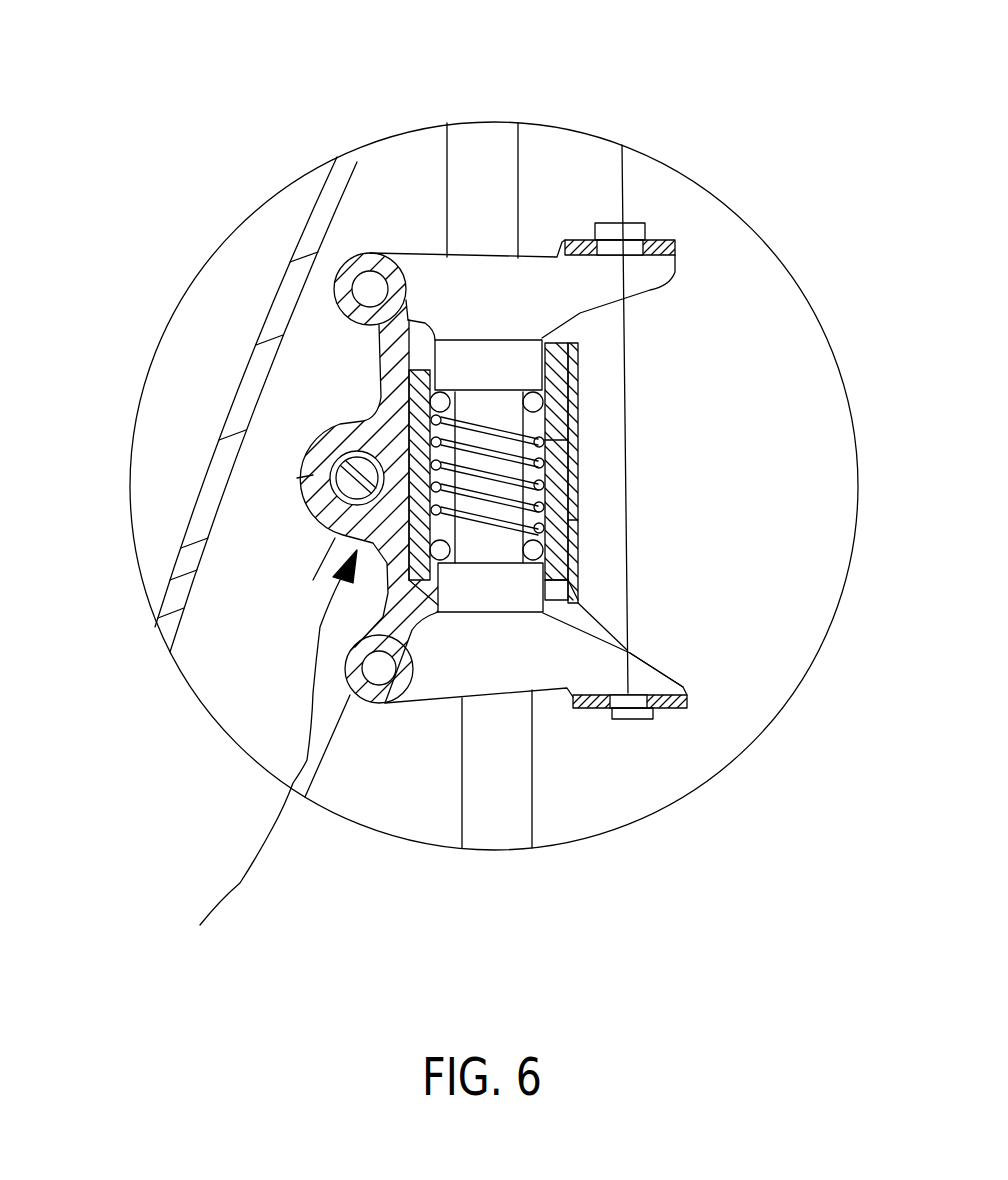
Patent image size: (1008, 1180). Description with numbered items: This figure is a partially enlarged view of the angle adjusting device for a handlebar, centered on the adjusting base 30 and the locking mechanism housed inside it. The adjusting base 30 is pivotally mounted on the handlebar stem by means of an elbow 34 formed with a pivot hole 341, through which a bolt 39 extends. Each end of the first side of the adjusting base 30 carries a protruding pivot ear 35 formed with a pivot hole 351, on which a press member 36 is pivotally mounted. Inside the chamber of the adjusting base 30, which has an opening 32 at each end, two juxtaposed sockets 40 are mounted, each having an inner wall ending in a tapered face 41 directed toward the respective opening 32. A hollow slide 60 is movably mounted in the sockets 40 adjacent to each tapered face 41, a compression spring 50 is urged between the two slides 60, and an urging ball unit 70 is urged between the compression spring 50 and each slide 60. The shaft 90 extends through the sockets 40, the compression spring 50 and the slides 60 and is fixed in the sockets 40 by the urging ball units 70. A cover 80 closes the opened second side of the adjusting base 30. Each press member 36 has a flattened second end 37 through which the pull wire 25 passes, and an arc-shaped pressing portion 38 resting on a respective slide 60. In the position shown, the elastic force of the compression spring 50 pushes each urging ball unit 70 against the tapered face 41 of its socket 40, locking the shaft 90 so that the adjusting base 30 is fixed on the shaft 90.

The pull wire 25 is at (630, 585).
The adjusting base 30 is at (261, 752).
The opening 32 is at (560, 598).
The elbow 34 is at (312, 452).
The pivot hole 341 is at (313, 580).
The pivot ear 35 is at (362, 253).
The pivot hole 351 is at (357, 287).
The press member 36 is at (473, 257).
The flattened second end 37 is at (662, 243).
The arc-shaped pressing portion 38 is at (487, 337).
The bolt 39 is at (312, 452).
The socket 40 is at (580, 542).
The tapered face 41 is at (632, 613).
The compression spring 50 is at (580, 482).
The slide 60 is at (518, 366).
The urging ball unit 70 is at (565, 393).
The cover 80 is at (580, 430).
The shaft 90 is at (495, 542).